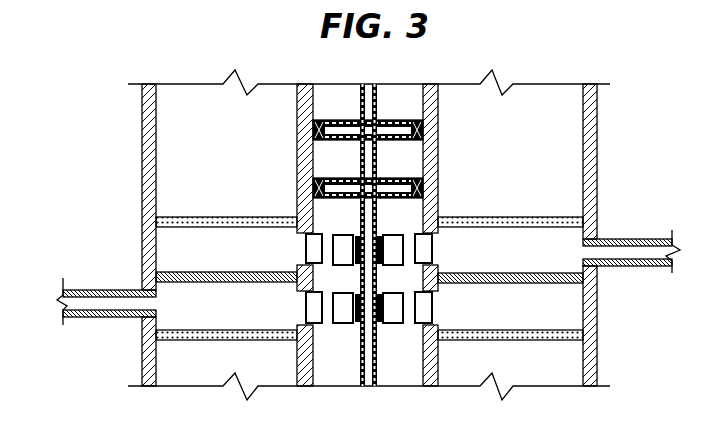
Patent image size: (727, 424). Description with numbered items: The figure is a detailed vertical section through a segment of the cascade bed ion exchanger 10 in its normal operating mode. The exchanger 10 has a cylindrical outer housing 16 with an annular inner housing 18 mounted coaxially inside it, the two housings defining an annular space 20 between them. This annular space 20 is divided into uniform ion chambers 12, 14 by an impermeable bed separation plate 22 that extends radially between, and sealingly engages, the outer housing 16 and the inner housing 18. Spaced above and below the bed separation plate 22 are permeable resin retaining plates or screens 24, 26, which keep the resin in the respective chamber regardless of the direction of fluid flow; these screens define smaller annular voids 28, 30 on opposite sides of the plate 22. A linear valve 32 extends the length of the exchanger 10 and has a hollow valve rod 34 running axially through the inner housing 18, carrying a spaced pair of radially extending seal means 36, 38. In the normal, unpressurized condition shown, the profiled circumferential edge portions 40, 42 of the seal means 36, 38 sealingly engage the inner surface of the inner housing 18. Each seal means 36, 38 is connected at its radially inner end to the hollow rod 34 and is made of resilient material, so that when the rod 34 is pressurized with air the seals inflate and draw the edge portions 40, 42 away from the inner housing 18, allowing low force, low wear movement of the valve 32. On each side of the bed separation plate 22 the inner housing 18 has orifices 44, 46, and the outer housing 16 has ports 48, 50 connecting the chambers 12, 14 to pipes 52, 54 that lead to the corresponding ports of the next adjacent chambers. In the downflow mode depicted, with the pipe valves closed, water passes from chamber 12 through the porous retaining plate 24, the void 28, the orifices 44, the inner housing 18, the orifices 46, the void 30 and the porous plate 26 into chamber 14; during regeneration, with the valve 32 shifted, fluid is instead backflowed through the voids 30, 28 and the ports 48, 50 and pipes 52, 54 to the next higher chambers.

The exchanger 10 is at (106, 126).
The ion chamber 12 is at (201, 165).
The ion chamber 14 is at (201, 378).
The outer housing 16 is at (597, 116).
The inner housing 18 is at (297, 116).
The annular space 20 is at (569, 165).
The bed separation plate 22 is at (510, 298).
The resin retaining plate 24 is at (554, 205).
The resin retaining plate 26 is at (554, 354).
The void 28 is at (201, 267).
The void 30 is at (201, 320).
The linear valve 32 is at (330, 156).
The valve rod 34 is at (378, 160).
The seal means 36 is at (420, 124).
The seal means 38 is at (315, 184).
The circumferential edge portion 40 is at (430, 142).
The circumferential edge portion 42 is at (315, 196).
The orifices 44 is at (306, 250).
The orifices 46 is at (306, 306).
The port 48 is at (106, 283).
The port 50 is at (583, 252).
The pipe 52 is at (97, 330).
The pipe 54 is at (644, 281).